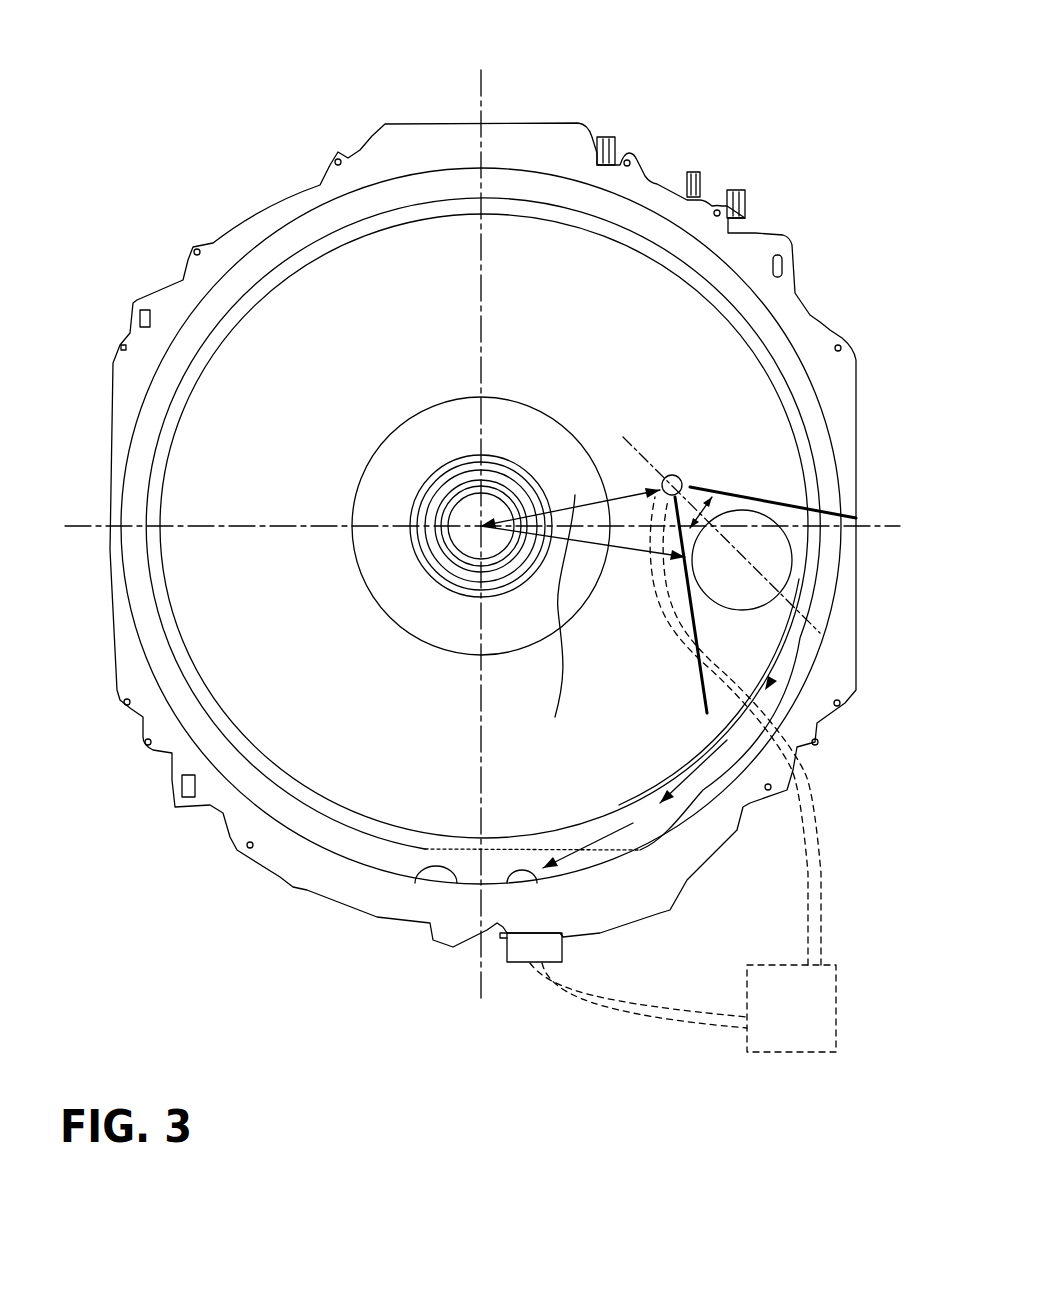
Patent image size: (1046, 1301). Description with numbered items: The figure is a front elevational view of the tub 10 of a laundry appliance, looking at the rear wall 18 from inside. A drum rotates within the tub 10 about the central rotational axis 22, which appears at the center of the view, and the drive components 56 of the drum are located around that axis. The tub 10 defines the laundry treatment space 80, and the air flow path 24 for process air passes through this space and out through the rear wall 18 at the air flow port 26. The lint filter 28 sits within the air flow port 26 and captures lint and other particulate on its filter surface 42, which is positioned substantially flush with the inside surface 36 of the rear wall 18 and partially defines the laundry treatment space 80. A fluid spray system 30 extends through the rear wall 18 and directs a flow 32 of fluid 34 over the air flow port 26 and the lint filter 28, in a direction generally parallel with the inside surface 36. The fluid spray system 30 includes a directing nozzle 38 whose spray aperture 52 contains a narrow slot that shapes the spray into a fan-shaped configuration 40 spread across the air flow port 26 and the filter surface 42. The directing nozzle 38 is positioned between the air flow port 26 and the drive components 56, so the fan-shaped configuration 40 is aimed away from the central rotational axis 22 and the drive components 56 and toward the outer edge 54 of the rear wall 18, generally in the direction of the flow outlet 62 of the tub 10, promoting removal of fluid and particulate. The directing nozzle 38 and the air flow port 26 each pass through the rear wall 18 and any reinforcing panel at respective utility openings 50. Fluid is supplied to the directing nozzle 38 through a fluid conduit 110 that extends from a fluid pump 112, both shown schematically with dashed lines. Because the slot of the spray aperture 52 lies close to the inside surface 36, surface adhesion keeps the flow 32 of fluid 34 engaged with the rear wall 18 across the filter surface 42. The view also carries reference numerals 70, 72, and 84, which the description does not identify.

The tub 10 is at (660, 178).
The rear wall 18 is at (333, 292).
The central rotational axis 22 is at (481, 526).
The air flow path 24 is at (800, 565).
The air flow port 26 is at (755, 612).
The lint filter 28 is at (773, 553).
The fluid spray system 30 is at (684, 464).
The flow 32 is at (786, 505).
The fluid 34 is at (786, 520).
The inside surface 36 is at (617, 666).
The directing nozzle 38 is at (670, 476).
The fan-shaped configuration 40 is at (832, 495).
The filter surface 42 is at (708, 588).
The utility openings 50 is at (792, 578).
The spray aperture 52 is at (608, 505).
The outer edge 54 is at (425, 868).
The drive components 56 is at (417, 555).
The flow outlet 62 is at (517, 965).
The hub 70 is at (575, 495).
The hub leader curve 72 is at (550, 620).
The laundry treatment space 80 is at (298, 760).
The flow arrow 84 is at (750, 480).
The fluid conduit 110 is at (808, 837).
The fluid pump 112 is at (838, 1017).